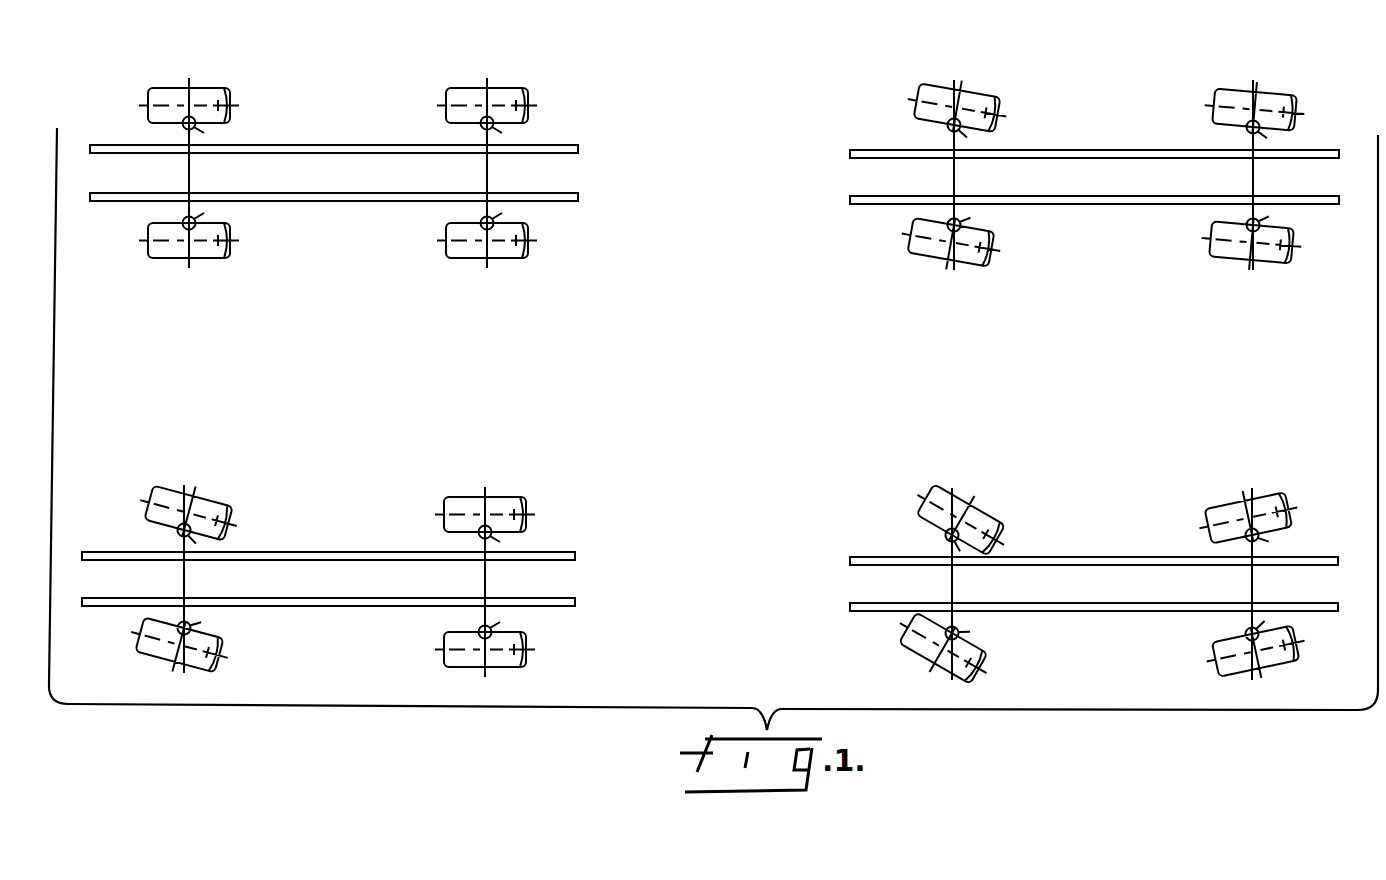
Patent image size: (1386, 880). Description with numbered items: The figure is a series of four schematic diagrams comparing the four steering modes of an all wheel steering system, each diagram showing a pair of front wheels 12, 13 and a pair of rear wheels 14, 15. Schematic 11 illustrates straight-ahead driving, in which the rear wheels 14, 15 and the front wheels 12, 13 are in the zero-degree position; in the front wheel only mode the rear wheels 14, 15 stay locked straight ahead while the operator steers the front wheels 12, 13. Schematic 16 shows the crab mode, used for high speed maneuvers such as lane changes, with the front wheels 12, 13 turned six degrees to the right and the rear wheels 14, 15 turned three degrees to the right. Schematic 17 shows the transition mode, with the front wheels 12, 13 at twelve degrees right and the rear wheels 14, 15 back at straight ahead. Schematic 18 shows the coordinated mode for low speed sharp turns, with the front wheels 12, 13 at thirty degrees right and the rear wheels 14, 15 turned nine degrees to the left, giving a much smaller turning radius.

The schematic of straight-ahead driving 11 is at (322, 76).
The front wheel 12 is at (178, 90).
The front wheel 13 is at (152, 255).
The rear wheel 14 is at (526, 100).
The rear wheel 15 is at (526, 252).
The schematic of crab mode 16 is at (1117, 97).
The schematic of transition mode 17 is at (315, 510).
The schematic of coordinated mode 18 is at (1133, 490).